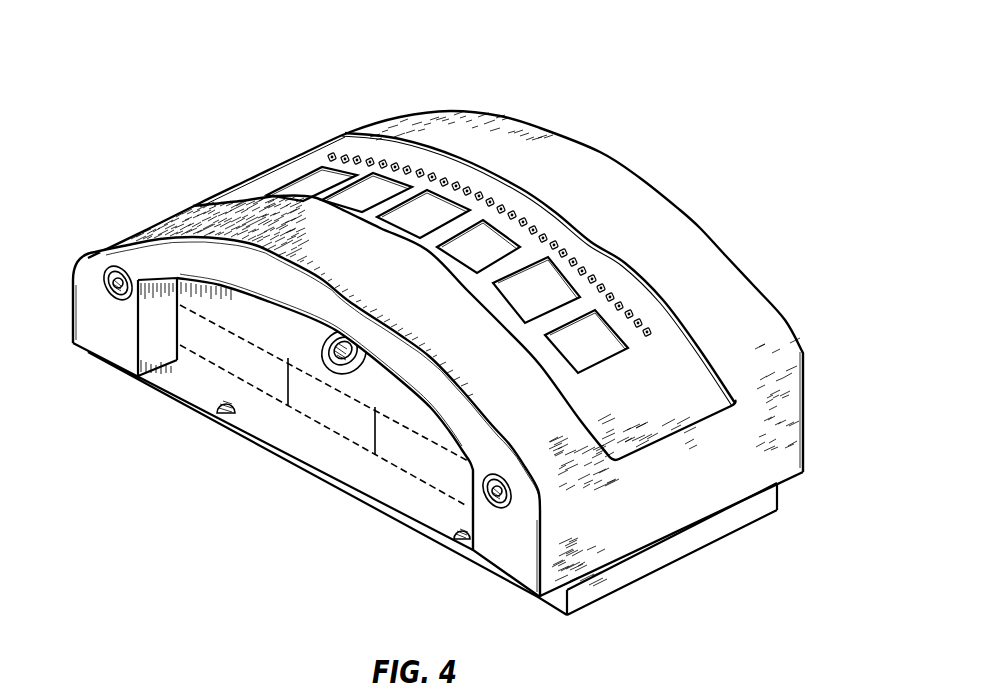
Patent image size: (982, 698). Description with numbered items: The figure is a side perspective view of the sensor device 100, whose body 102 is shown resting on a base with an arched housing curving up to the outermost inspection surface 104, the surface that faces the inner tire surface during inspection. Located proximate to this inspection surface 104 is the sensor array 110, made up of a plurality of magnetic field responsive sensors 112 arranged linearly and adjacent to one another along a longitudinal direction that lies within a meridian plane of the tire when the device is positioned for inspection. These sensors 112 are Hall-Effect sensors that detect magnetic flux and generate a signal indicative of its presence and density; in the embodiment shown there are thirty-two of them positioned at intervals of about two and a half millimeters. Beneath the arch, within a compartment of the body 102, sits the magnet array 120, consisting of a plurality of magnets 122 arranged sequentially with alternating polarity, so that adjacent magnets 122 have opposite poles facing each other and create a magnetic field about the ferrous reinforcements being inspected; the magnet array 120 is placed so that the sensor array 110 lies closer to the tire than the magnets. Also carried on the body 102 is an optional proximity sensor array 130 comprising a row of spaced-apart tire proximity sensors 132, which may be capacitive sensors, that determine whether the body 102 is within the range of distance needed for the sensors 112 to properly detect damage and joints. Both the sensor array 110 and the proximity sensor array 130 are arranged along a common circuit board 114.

The sensor device 100 is at (729, 48).
The body 102 is at (330, 451).
The outermost inspection surface 104 is at (460, 126).
The sensor array 110 is at (362, 152).
The magnetic field responsive sensors 112 is at (541, 233).
The circuit board 114 is at (687, 403).
The magnet array 120 is at (220, 365).
The magnets 122 is at (247, 369).
The proximity sensor array 130 is at (282, 183).
The tire proximity sensors 132 is at (592, 345).